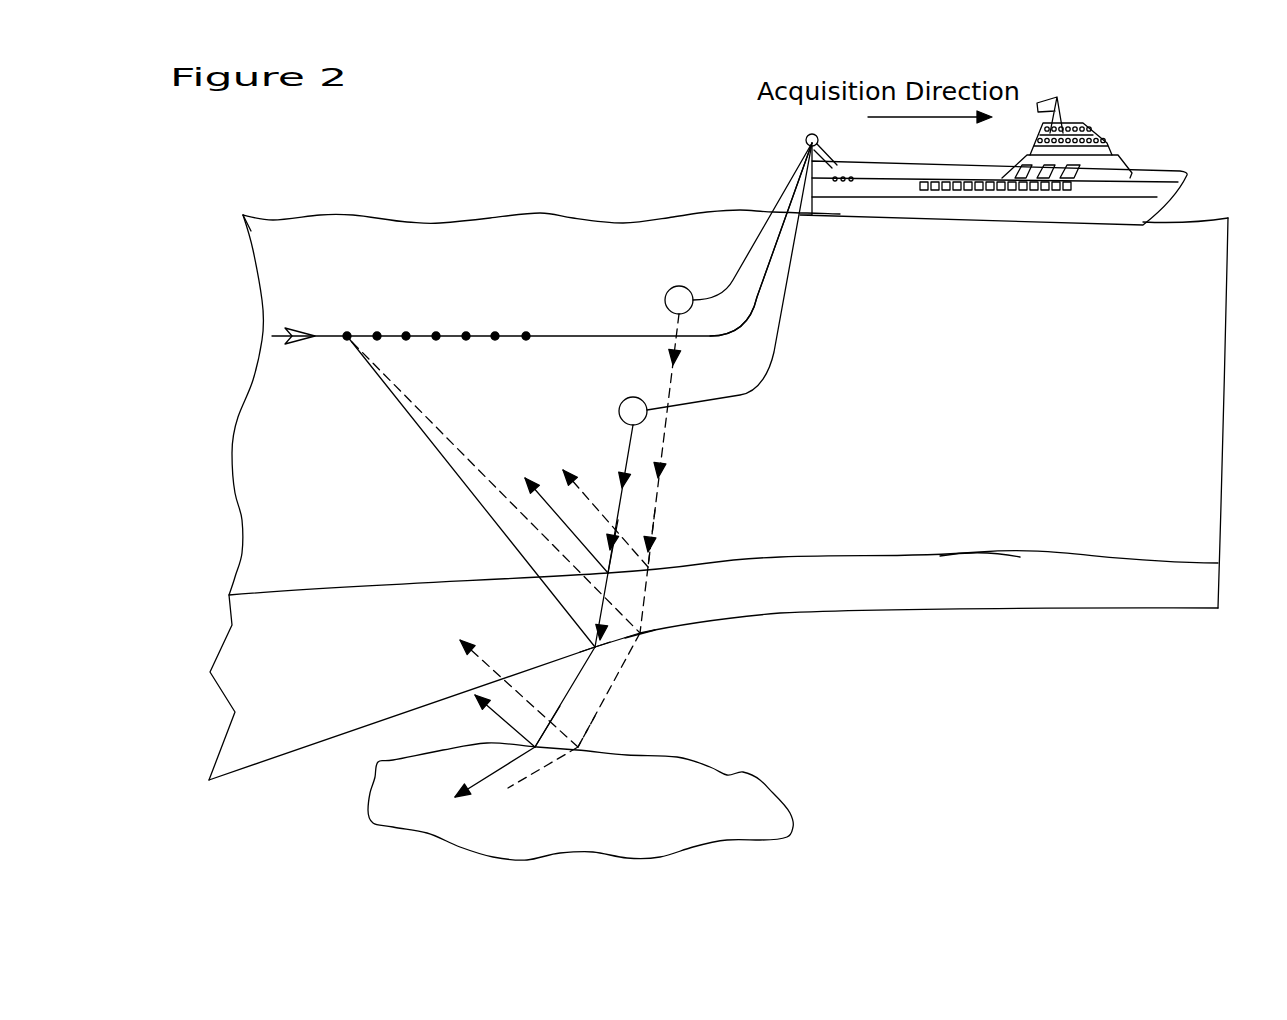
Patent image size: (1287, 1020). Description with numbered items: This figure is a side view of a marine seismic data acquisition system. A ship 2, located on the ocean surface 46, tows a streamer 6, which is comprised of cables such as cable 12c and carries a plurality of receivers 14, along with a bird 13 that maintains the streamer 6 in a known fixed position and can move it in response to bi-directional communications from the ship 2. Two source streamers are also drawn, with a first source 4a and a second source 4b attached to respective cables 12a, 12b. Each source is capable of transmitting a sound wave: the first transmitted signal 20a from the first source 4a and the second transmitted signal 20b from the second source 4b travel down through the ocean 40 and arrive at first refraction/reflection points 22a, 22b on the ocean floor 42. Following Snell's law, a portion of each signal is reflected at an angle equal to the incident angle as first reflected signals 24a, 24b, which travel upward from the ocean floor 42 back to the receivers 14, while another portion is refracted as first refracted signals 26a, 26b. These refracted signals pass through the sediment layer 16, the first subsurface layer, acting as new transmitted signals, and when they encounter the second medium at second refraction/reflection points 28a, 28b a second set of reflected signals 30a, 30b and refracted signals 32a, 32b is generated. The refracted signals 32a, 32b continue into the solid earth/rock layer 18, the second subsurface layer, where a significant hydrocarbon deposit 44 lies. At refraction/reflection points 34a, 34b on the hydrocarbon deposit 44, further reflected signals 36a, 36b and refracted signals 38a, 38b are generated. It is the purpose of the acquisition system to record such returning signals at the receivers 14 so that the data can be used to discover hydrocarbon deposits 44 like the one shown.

The ship 2 is at (1158, 163).
The first source 4a is at (664, 300).
The second source 4b is at (620, 404).
The streamer 6 is at (512, 314).
The cable 12a is at (752, 247).
The cable 12b is at (768, 372).
The cable 12c is at (558, 334).
The bird 13 is at (302, 328).
The receiver 14 is at (527, 333).
The sediment layer 16 is at (1045, 584).
The solid earth/rock layer 18 is at (1022, 675).
The first transmitted signal 20a is at (672, 434).
The second transmitted signal 20b is at (626, 455).
The first refraction/reflection point 22a is at (655, 562).
The first refraction/reflection point 22b is at (607, 558).
The first reflected signal 24a is at (590, 505).
The first reflected signal 24b is at (548, 497).
The first refracted signal 26a is at (650, 580).
The first refracted signal 26b is at (606, 592).
The second refraction/reflection point 28a is at (640, 641).
The second refraction/reflection point 28b is at (595, 647).
The second reflected signal 30a is at (468, 462).
The second reflected signal 30b is at (455, 473).
The second refracted signal 32a is at (620, 673).
The second refracted signal 32b is at (581, 672).
The refraction/reflection point 34a is at (582, 752).
The refraction/reflection point 34b is at (532, 716).
The reflected signal 36a is at (485, 650).
The reflected signal 36b is at (500, 718).
The refracted signal 38a is at (537, 773).
The refracted signal 38b is at (498, 772).
The ocean 40 is at (1011, 364).
The ocean floor 42 is at (985, 563).
The hydrocarbon deposit 44 is at (738, 776).
The ocean surface 46 is at (345, 213).